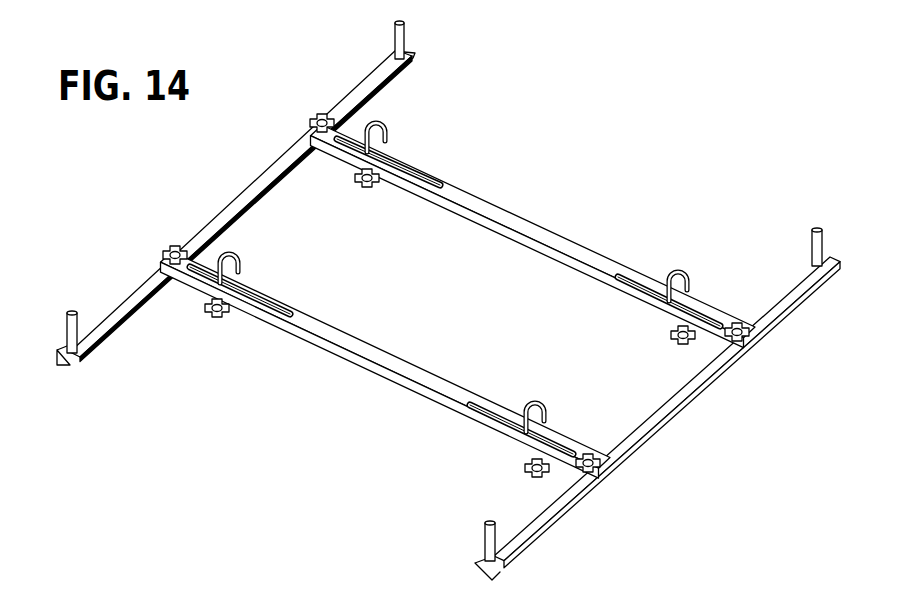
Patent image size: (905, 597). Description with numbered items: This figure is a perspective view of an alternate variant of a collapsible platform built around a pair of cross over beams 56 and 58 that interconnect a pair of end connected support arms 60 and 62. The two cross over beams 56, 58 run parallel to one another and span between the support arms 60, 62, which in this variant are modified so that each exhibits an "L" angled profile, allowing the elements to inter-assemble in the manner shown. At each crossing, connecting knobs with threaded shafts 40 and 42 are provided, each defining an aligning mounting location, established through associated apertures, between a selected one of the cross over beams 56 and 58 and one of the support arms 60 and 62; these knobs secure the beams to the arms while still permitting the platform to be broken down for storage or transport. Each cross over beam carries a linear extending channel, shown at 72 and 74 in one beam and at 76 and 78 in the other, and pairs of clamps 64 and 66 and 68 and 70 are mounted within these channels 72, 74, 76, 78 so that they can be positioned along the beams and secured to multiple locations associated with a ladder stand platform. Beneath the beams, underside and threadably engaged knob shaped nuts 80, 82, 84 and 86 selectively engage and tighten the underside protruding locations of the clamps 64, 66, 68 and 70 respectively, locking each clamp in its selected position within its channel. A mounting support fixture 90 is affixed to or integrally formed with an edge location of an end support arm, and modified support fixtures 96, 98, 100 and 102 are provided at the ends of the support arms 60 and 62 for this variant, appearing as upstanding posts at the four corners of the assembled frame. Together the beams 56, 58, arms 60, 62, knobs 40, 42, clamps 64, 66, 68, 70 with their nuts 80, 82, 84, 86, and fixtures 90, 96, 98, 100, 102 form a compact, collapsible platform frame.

The connecting knob/shaft 40 is at (172, 248).
The connecting knob/shaft 42 is at (600, 465).
The cross over beam 56 is at (382, 385).
The cross over beam 58 is at (520, 215).
The end connected support arm 60 is at (246, 189).
The end connected support arm 62 is at (680, 400).
The clamp 64 is at (233, 262).
The clamp 66 is at (530, 408).
The clamp 68 is at (385, 128).
The clamp 70 is at (690, 282).
The linear extending channel 72 is at (273, 310).
The linear extending channel 74 is at (500, 420).
The linear extending channel 76 is at (415, 175).
The linear extending channel 78 is at (645, 290).
The knob shaped nut 80 is at (210, 312).
The knob shaped nut 82 is at (530, 472).
The knob shaped nut 84 is at (356, 183).
The knob shaped nut 86 is at (675, 340).
The mounting support fixture 90 is at (313, 596).
The modified support fixture 96 is at (67, 330).
The modified support fixture 98 is at (405, 45).
The modified support fixture 100 is at (495, 540).
The modified support fixture 102 is at (822, 250).